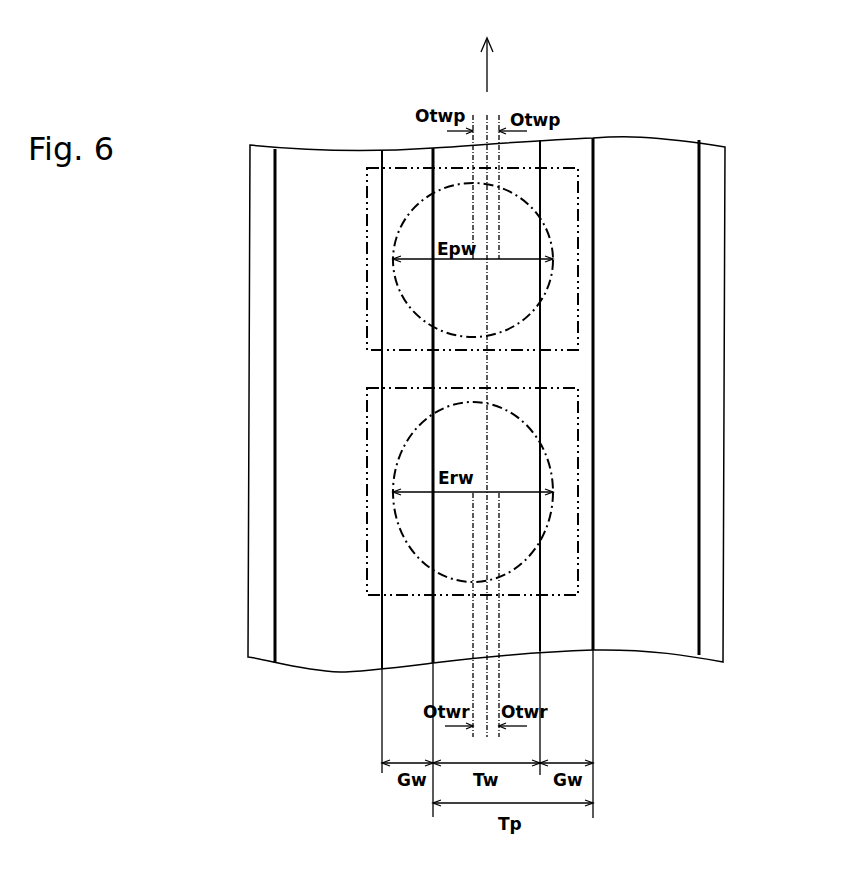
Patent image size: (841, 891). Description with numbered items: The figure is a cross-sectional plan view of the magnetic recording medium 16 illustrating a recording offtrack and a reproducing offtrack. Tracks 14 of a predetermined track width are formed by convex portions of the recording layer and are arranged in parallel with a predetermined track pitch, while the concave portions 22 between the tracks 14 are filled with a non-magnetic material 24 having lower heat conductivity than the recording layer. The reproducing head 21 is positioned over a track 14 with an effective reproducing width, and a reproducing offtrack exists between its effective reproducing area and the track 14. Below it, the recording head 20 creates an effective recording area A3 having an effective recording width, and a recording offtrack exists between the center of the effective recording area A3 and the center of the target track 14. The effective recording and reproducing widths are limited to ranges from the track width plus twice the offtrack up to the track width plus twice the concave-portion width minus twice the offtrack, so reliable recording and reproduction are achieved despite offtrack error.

The magnetic recording medium 16 is at (686, 126).
The concave portions 22 is at (580, 151).
The reproducing head 21 is at (580, 200).
The non-magnetic material 24 is at (580, 332).
The recording head 20 is at (580, 428).
The tracks 14 is at (527, 362).
The effective recording area A3 is at (497, 577).